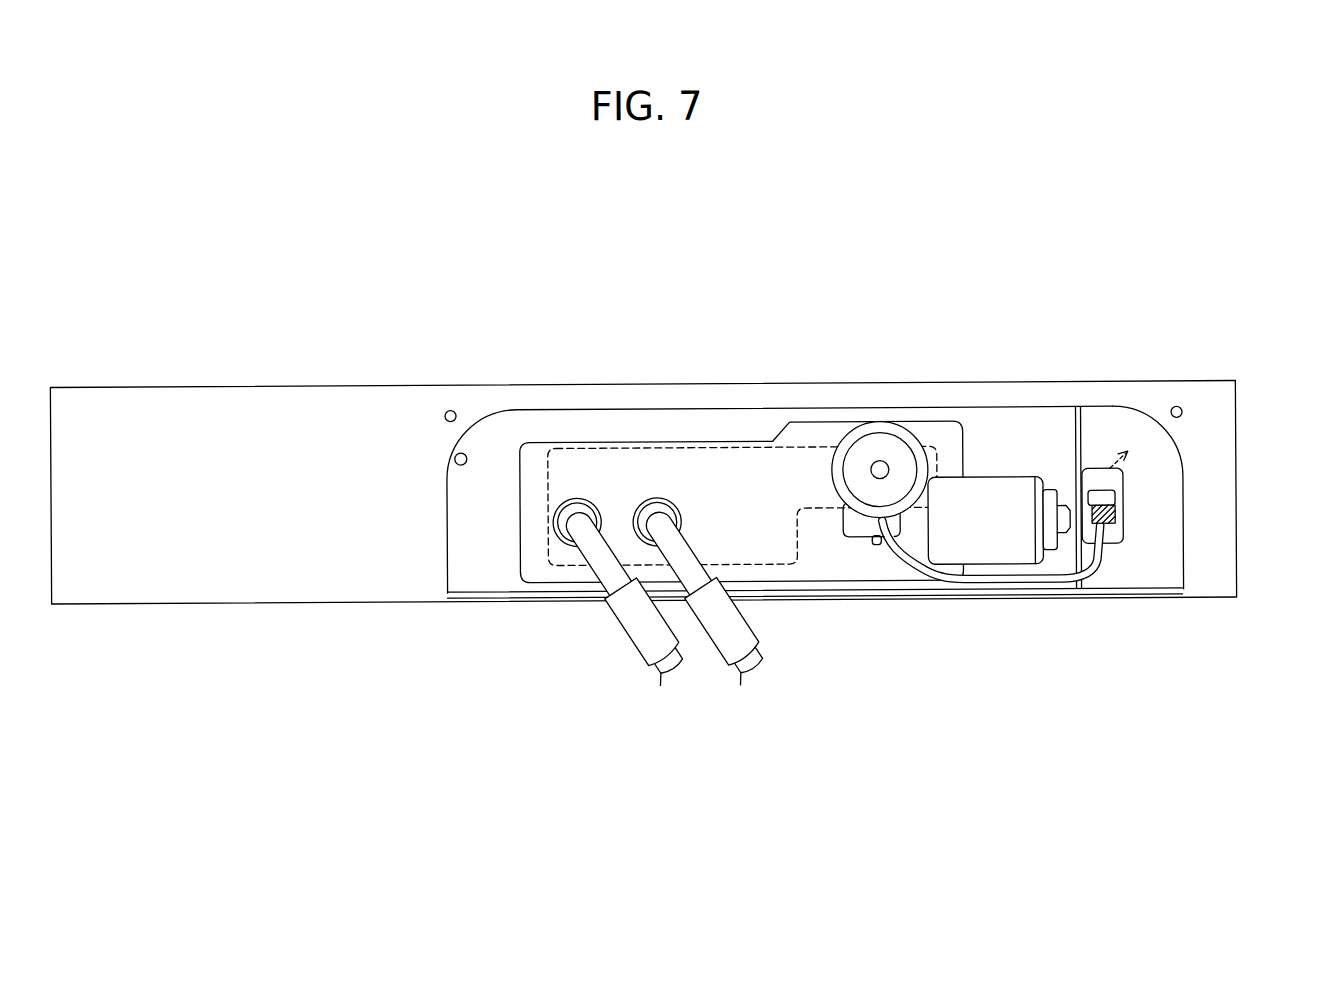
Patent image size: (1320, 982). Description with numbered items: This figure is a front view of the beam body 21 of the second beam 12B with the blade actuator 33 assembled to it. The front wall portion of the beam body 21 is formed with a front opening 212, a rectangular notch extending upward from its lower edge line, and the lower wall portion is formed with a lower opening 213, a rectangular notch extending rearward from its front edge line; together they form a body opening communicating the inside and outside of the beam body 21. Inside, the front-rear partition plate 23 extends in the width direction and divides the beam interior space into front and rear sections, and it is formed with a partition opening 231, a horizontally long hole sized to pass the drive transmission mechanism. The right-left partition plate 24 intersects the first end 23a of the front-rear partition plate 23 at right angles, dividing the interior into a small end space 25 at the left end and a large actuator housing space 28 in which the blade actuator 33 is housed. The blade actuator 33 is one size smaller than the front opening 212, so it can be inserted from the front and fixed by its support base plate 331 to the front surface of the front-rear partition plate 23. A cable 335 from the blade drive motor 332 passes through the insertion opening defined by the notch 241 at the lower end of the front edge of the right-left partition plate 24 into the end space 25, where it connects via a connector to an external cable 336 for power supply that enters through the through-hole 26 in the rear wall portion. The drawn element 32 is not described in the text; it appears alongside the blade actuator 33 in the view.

The second beam 12B is at (669, 524).
The beam body 21 is at (305, 382).
The front-rear partition plate 23 is at (531, 426).
The first end 23a is at (1062, 462).
The right-left partition plate 24 is at (1086, 437).
The end space 25 is at (1159, 480).
The through-hole 26 is at (1124, 512).
The actuator housing space 28 is at (831, 441).
The hose 32 is at (653, 660).
The blade actuator 33 is at (833, 569).
The front opening 212 is at (457, 461).
The lower opening 213 is at (482, 592).
The partition opening 231 is at (651, 444).
The support base plate 331 is at (733, 463).
The blade drive motor 332 is at (990, 495).
The cable 335 is at (977, 586).
The external cable 336 is at (1103, 480).
The notch 241 is at (1097, 592).